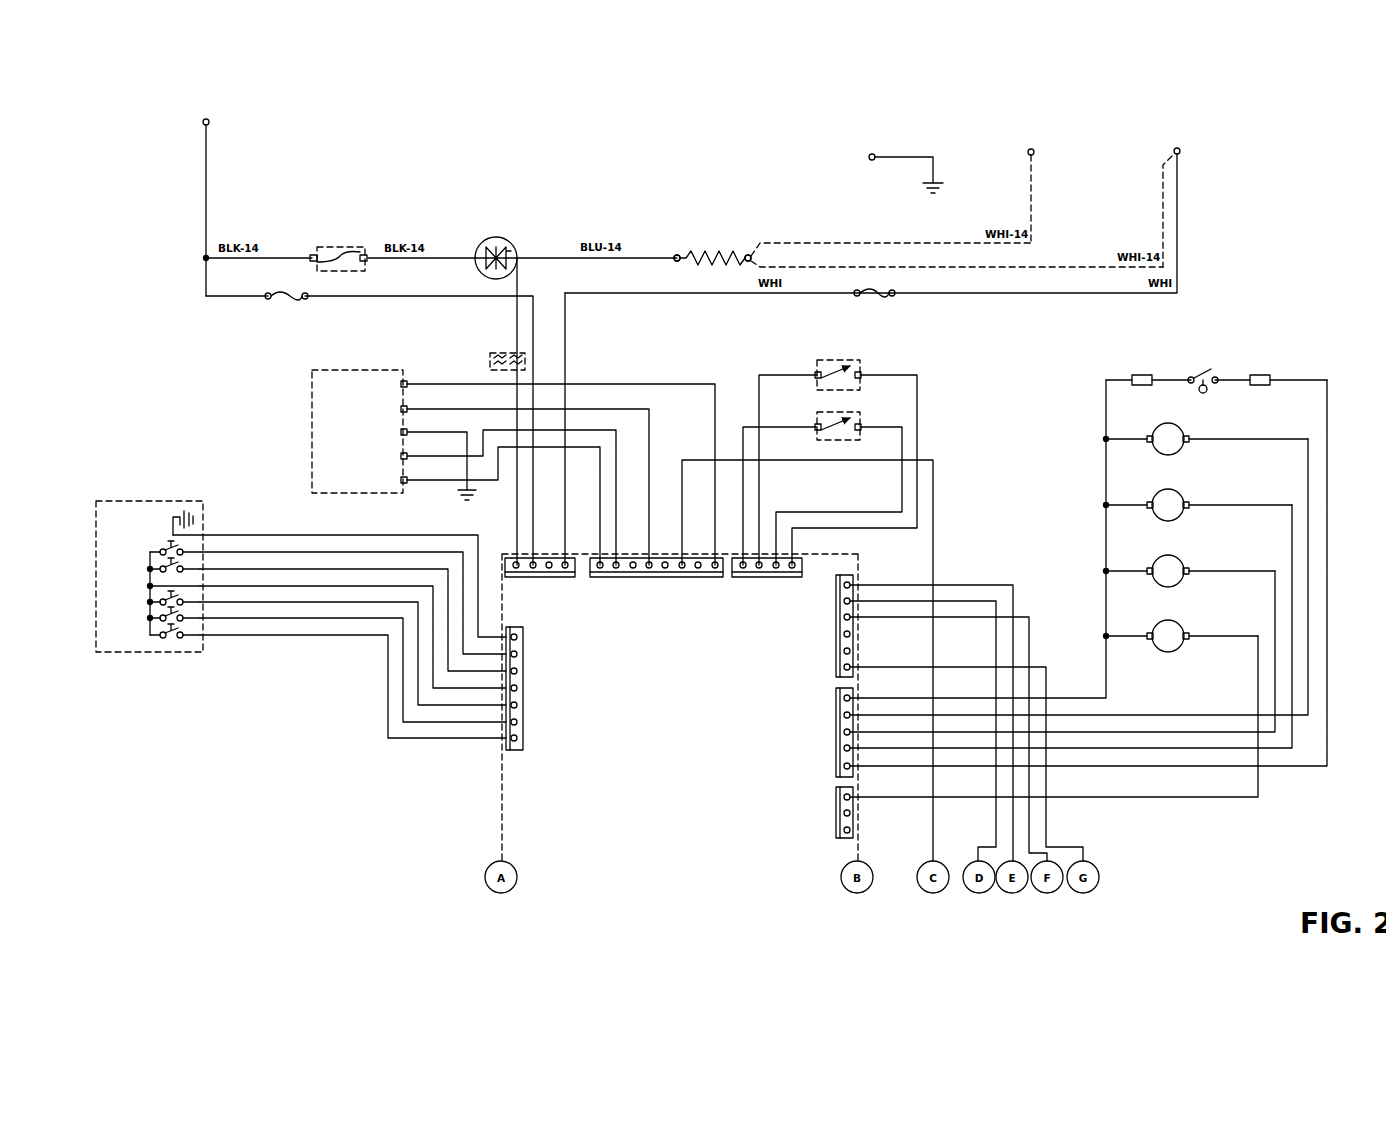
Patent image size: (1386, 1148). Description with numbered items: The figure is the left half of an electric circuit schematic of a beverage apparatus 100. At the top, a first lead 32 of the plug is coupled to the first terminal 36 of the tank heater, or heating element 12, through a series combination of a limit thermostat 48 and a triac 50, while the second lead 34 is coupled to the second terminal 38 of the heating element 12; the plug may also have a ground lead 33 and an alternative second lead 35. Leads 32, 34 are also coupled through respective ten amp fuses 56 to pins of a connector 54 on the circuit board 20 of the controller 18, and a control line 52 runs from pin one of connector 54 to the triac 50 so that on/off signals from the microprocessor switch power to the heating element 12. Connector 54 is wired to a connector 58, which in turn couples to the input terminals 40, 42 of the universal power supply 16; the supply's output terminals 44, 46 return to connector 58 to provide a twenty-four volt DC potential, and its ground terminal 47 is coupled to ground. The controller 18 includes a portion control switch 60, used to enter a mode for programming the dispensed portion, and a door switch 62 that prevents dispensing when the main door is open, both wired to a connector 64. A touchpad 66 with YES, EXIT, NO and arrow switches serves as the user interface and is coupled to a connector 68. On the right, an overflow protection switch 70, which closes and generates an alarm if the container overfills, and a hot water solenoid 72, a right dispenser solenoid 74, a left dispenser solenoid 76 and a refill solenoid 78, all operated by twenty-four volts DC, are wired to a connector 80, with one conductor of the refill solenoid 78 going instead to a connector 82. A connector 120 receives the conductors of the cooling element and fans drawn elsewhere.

The beverage apparatus 100 is at (153, 108).
The first lead 32 is at (210, 122).
The limit thermostat 48 is at (334, 196).
The triac 50 is at (488, 208).
The heating element 12 is at (708, 226).
The first terminal 36 is at (675, 262).
The second terminal 38 is at (751, 255).
The ground lead 33 is at (870, 154).
The alternative second lead 35 is at (1028, 154).
The second lead 34 is at (1175, 153).
The fuses 56 is at (288, 330).
The control line 52 is at (515, 508).
The universal power supply 16 is at (316, 426).
The input terminal 42 is at (406, 378).
The input terminal 40 is at (396, 414).
The ground terminal 47 is at (396, 438).
The output terminal 46 is at (396, 462).
The output terminal 44 is at (405, 488).
The connector 54 is at (550, 598).
The connector 58 is at (642, 594).
The connector 64 is at (768, 600).
The portion control switch 60 is at (810, 364).
The door switch 62 is at (866, 420).
The controller 18 is at (952, 364).
The touchpad 66 is at (152, 478).
The connector 68 is at (585, 690).
The circuit board 20 is at (624, 754).
The connector 120 is at (828, 618).
The connector 80 is at (826, 734).
The connector 82 is at (826, 816).
The overflow protection switch 70 is at (1238, 318).
The hot water solenoid 72 is at (1185, 424).
The right dispenser solenoid 74 is at (1190, 516).
The left dispenser solenoid 76 is at (1190, 582).
The refill solenoid 78 is at (1190, 648).